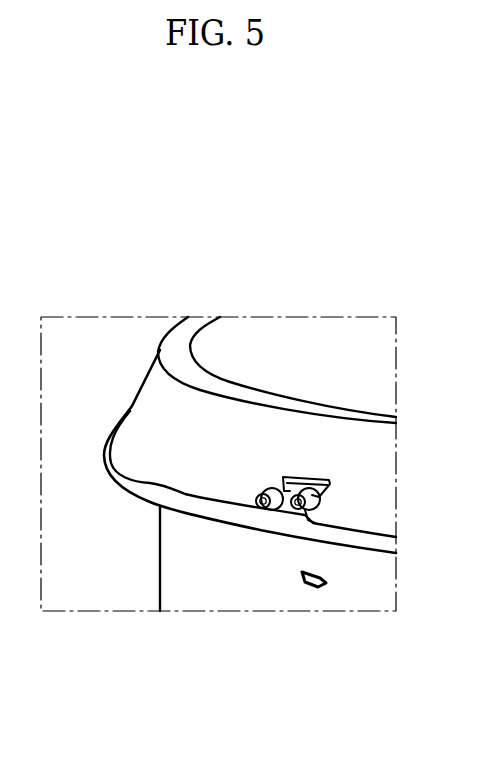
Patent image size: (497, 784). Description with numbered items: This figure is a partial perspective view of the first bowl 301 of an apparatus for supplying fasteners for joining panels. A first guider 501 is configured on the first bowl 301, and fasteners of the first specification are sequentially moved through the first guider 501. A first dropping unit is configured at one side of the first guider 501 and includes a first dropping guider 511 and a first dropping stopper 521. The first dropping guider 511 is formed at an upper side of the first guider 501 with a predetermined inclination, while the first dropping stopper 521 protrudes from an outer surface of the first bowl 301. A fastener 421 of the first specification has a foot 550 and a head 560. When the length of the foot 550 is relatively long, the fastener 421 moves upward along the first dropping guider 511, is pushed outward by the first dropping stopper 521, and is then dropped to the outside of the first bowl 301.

The first bowl 301 is at (362, 588).
The first guider 501 is at (131, 490).
The first dropping stopper 521 is at (295, 477).
The head 560 is at (266, 487).
The foot 550 is at (256, 510).
The fastener 421 is at (244, 590).
The first dropping guider 511 is at (297, 514).